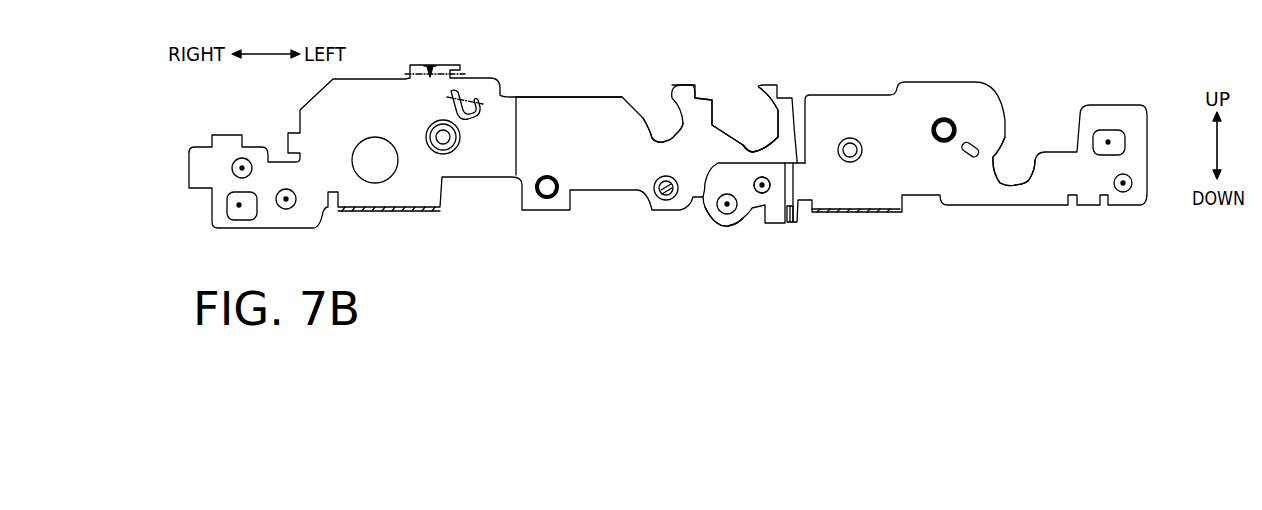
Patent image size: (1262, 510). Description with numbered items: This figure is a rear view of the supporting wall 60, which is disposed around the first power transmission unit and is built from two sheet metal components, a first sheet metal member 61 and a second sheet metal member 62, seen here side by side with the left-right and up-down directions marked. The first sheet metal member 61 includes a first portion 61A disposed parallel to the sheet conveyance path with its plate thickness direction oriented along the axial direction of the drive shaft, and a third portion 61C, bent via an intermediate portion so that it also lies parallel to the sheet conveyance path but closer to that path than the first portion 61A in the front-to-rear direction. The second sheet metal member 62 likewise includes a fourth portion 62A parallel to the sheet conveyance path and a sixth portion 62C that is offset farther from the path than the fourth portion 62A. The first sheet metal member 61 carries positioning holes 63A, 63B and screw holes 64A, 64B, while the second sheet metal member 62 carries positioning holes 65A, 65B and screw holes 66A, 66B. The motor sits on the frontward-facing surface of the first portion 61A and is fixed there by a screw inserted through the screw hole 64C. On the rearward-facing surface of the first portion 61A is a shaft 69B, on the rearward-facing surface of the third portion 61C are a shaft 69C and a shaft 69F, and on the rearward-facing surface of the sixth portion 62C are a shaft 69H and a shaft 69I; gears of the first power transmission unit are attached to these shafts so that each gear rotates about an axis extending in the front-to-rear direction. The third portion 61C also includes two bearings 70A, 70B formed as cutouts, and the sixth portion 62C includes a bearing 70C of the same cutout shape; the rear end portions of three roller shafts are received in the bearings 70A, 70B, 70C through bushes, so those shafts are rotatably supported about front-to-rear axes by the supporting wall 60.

The supporting wall 60 is at (846, 78).
The first sheet metal member 61 is at (486, 163).
The first portion 61A is at (372, 88).
The third portion 61C is at (556, 106).
The second sheet metal member 62 is at (910, 183).
The fourth portion 62A is at (730, 182).
The sixth portion 62C is at (948, 112).
The positioning hole 63A is at (239, 205).
The positioning hole 63B is at (763, 187).
The screw hole 64A is at (242, 166).
The screw hole 64B is at (727, 204).
The screw hole 64C is at (286, 200).
The positioning hole 65A is at (1108, 142).
The positioning hole 65B is at (765, 186).
The screw hole 66A is at (1123, 183).
The screw hole 66B is at (728, 228).
The shaft 69B is at (443, 140).
The shaft 69C is at (547, 190).
The shaft 69F is at (666, 190).
The shaft 69H is at (850, 152).
The shaft 69I is at (944, 132).
The bearing 70A is at (670, 136).
The bearing 70B is at (770, 138).
The bearing 70C is at (1000, 180).